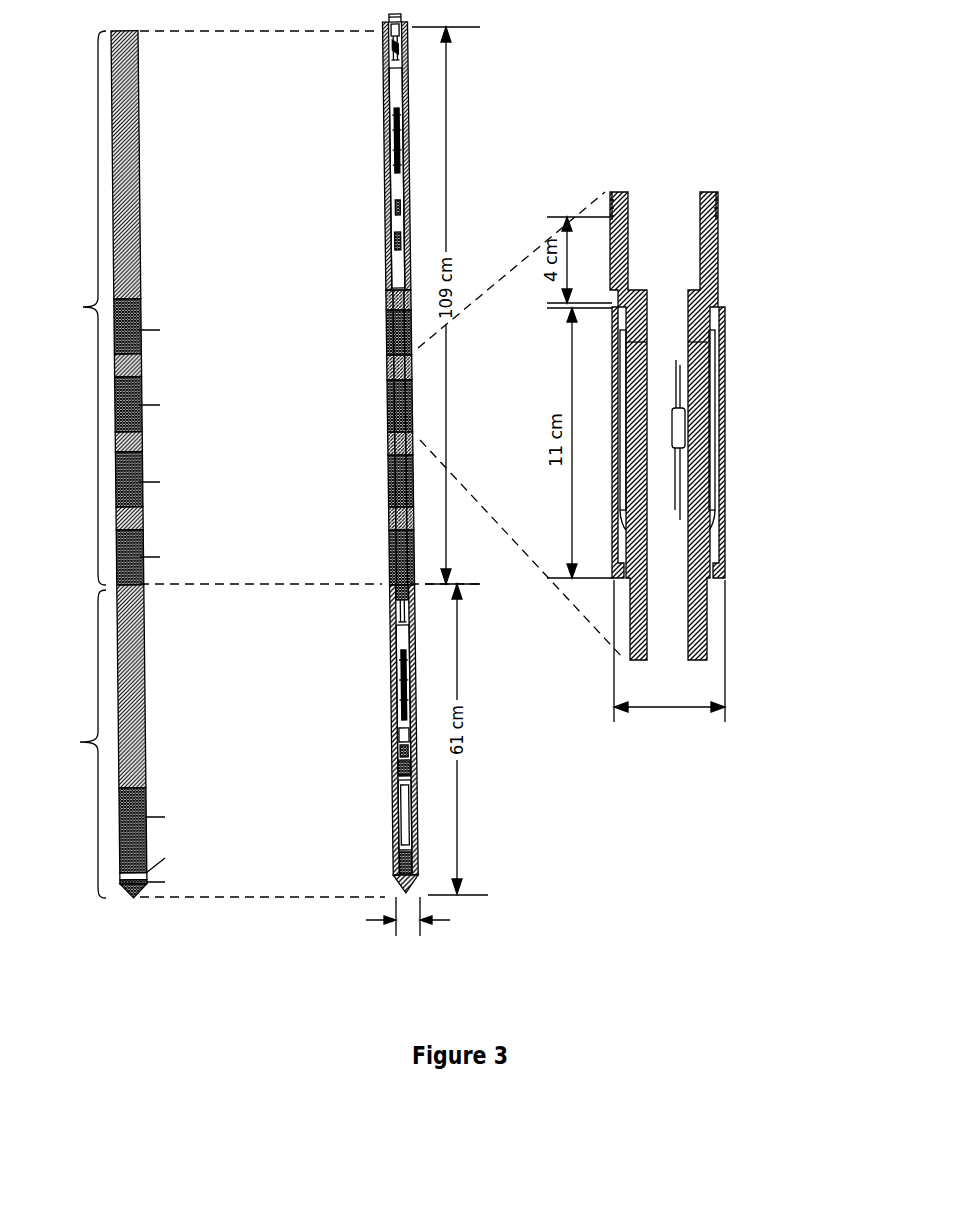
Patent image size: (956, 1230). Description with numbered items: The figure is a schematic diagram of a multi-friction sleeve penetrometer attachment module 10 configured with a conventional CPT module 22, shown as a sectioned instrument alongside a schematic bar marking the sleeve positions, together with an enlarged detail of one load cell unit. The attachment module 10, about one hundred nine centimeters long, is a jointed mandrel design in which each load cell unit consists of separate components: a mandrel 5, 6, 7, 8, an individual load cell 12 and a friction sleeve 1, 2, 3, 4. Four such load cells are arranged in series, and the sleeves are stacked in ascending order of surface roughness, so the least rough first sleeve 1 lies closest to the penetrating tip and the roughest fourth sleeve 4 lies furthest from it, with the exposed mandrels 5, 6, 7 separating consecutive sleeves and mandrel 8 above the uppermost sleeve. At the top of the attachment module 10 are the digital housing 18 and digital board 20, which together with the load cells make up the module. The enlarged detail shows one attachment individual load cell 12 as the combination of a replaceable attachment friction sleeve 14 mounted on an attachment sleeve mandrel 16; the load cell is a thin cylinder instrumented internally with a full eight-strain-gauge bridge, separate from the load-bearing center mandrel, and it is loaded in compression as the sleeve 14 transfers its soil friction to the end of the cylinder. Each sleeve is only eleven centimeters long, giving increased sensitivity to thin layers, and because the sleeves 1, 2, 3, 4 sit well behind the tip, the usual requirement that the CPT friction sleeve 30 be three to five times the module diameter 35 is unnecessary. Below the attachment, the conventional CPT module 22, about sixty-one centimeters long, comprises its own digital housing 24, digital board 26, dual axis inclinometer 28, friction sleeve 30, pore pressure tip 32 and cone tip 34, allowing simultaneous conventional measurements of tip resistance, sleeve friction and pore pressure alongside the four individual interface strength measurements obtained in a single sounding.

The first attachment friction sleeve 1 is at (390, 555).
The second attachment friction sleeve 2 is at (390, 478).
The third attachment friction sleeve 3 is at (388, 404).
The fourth attachment friction sleeve 4 is at (388, 327).
The mandrel 5 is at (388, 518).
The mandrel 6 is at (388, 443).
The mandrel 7 is at (390, 369).
The mandrel 8 is at (388, 297).
The multi-friction sleeve penetrometer attachment module 10 is at (111, 309).
The individual load cell 12 is at (715, 393).
The replaceable attachment friction sleeve 14 is at (722, 540).
The attachment sleeve mandrel 16 is at (712, 258).
The digital housing 18 is at (382, 98).
The digital board 20 is at (395, 165).
The conventional CPT module 22 is at (110, 743).
The digital housing 24 is at (392, 618).
The digital board 26 is at (400, 672).
The dual axis inclinometer 28 is at (398, 743).
The friction sleeve 30 is at (395, 818).
The pore pressure tip 32 is at (412, 866).
The cone tip 34 is at (392, 884).
The module diameter 35 is at (438, 960).